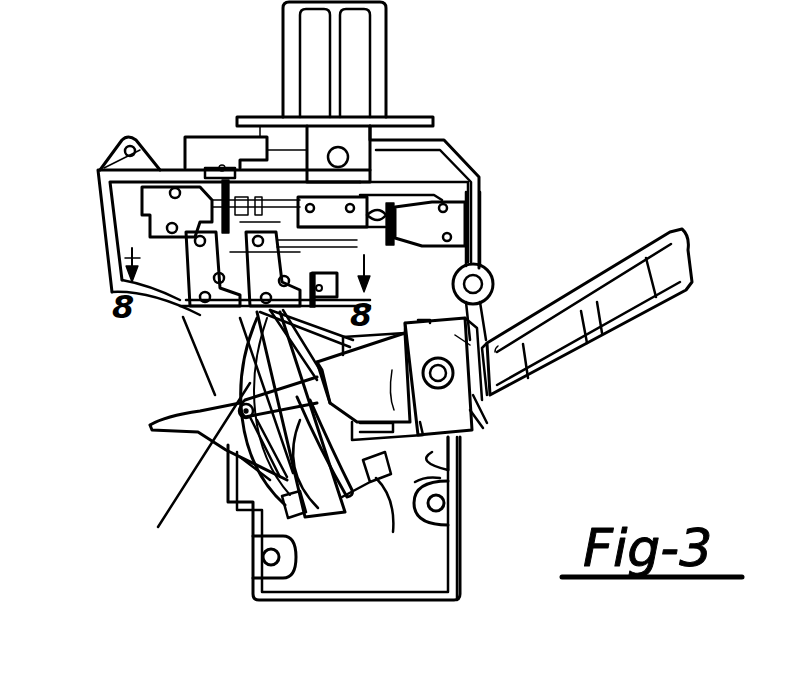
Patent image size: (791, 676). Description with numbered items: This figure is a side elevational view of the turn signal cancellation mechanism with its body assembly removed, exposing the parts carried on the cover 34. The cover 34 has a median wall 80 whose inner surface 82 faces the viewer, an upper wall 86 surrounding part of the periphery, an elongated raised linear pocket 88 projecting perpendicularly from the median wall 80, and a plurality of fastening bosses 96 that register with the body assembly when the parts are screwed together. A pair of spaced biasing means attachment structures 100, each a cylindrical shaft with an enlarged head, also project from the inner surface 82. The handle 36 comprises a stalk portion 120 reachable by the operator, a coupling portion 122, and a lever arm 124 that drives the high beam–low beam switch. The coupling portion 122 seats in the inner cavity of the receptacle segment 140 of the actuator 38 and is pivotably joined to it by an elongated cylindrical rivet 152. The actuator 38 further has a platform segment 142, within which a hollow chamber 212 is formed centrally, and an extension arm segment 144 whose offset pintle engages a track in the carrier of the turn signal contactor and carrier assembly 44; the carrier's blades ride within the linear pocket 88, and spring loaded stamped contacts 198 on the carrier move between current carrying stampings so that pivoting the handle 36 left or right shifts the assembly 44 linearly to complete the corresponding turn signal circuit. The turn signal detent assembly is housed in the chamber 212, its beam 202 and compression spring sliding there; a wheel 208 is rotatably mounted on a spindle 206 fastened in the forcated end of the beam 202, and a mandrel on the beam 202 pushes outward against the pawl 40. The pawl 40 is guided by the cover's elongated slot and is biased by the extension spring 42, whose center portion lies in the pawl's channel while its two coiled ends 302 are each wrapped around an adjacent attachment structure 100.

The cover 34 is at (432, 568).
The handle 36 is at (590, 320).
The actuator 38 is at (343, 543).
The pawl 40 is at (202, 437).
The extension spring 42 is at (330, 310).
The turn signal contactor and carrier assembly 44 is at (213, 320).
The median wall 80 is at (448, 468).
The inner surface 82 is at (318, 592).
The upper wall 86 is at (174, 168).
The linear pocket 88 is at (190, 292).
The fastening bosses 96 is at (122, 157).
The biasing means attachment structures 100 is at (370, 386).
The stalk portion 120 is at (666, 236).
The coupling portion 122 is at (490, 410).
The lever arm 124 is at (392, 335).
The receptacle segment 140 is at (460, 350).
The platform segment 142 is at (322, 503).
The extension arm segment 144 is at (282, 314).
The rivet 152 is at (424, 322).
The spring loaded stamped contacts 198 is at (222, 165).
The beam 202 is at (233, 452).
The spindle 206 is at (185, 458).
The wheel 208 is at (150, 427).
The hollow chamber 212 is at (358, 505).
The coiled ends 302 is at (372, 490).